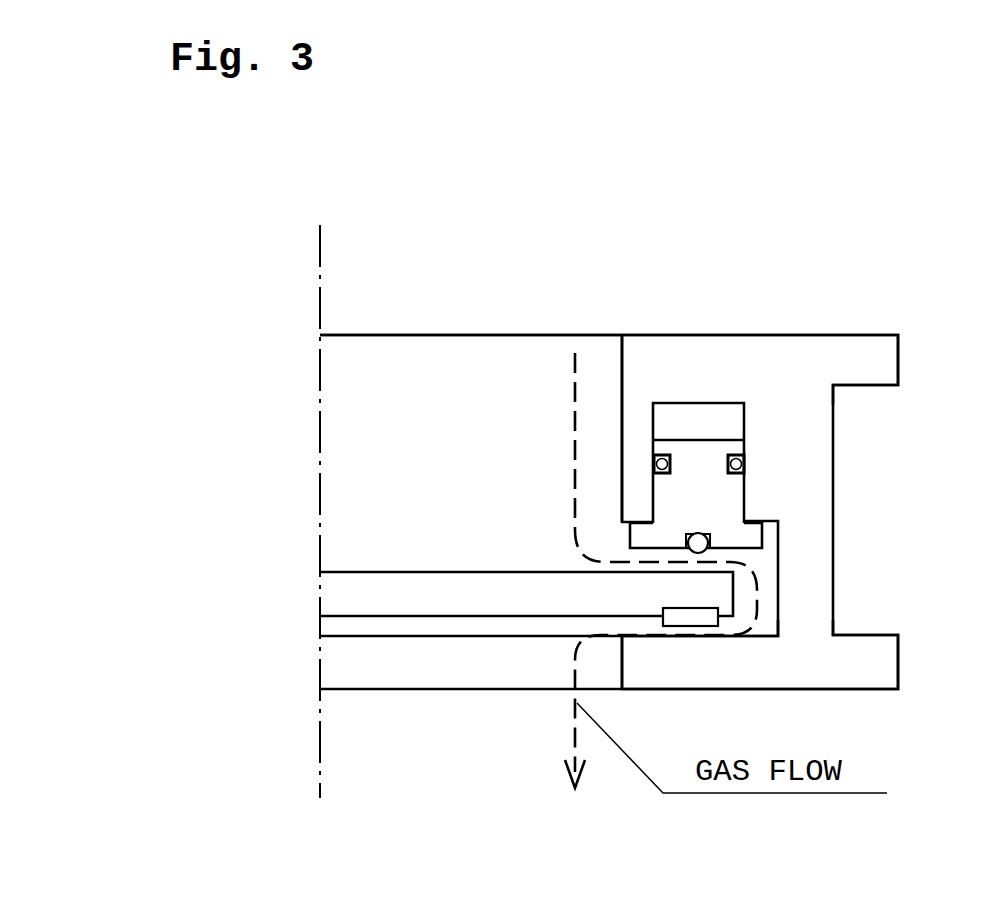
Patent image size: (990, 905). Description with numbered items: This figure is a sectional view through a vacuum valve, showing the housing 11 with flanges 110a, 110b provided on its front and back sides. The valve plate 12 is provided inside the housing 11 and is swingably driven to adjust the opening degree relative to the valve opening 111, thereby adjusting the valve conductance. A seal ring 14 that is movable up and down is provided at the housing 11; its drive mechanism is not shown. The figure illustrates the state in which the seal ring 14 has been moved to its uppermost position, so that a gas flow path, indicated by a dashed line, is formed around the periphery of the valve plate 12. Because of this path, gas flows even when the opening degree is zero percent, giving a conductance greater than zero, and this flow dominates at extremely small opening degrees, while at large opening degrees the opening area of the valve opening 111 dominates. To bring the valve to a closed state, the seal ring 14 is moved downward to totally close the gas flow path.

The housing 11 is at (818, 438).
The flange 110a is at (866, 346).
The flange 110b is at (885, 662).
The valve opening 111 is at (502, 367).
The valve plate 12 is at (345, 597).
The seal ring 14 is at (712, 498).